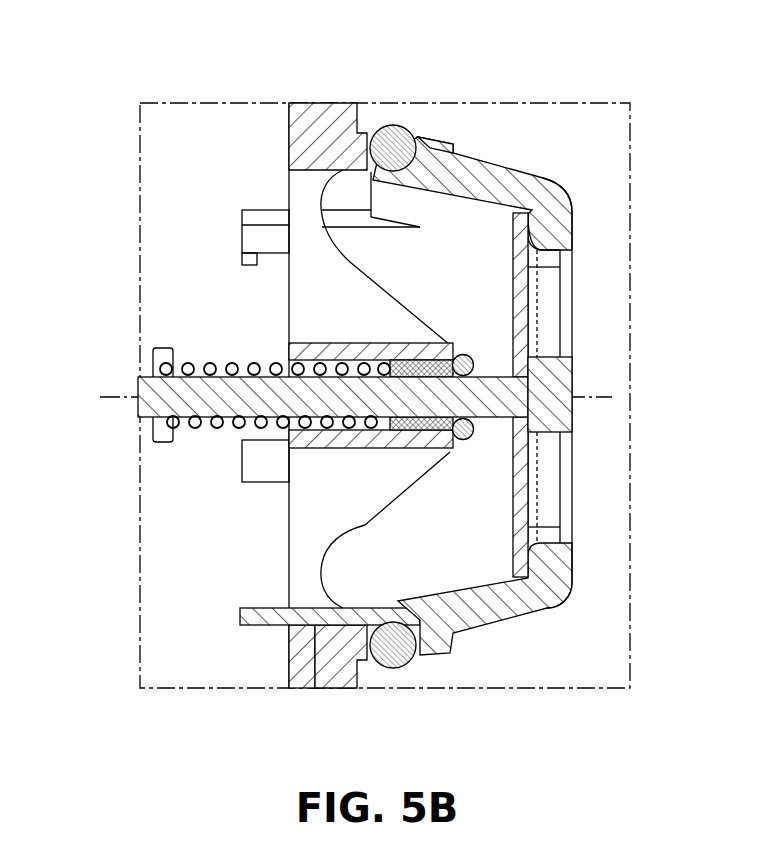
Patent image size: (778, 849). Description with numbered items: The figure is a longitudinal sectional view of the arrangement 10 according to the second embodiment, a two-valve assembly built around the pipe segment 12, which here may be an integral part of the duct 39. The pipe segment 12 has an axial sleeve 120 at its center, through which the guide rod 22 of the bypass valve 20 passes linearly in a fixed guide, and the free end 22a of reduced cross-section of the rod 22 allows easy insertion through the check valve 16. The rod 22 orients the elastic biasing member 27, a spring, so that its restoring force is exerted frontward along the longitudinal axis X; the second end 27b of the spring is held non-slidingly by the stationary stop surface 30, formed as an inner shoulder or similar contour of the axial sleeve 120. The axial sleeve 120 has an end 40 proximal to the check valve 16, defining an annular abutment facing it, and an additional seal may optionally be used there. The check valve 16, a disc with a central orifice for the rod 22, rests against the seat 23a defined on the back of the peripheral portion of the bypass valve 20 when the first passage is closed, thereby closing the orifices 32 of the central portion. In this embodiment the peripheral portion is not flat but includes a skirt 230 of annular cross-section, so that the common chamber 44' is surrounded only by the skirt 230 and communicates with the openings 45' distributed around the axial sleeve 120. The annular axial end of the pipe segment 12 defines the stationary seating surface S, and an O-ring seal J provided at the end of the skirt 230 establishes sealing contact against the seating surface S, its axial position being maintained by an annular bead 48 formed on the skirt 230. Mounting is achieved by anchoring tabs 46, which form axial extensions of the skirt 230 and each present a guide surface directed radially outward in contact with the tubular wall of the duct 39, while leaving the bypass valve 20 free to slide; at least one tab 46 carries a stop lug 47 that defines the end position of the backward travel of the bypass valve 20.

The arrangement 10 is at (226, 82).
The pipe segment 12 is at (310, 117).
The stationary seating surface S is at (367, 153).
The O-ring seal J is at (389, 132).
The annular bead 48 is at (432, 137).
The skirt 230 is at (481, 176).
The bypass valve 20 is at (578, 178).
The seat 23a is at (540, 233).
The orifices 32 is at (552, 278).
The end of the axial sleeve 40 is at (473, 357).
The check valve 16 is at (530, 476).
The common chamber 44' is at (515, 530).
The openings 45' is at (254, 257).
The anchoring tabs 46 is at (263, 218).
The stop lug 47 is at (242, 258).
The elastic biasing member 27 is at (232, 372).
The second end of the elastic biasing member 27b is at (393, 432).
The guide rod 22 is at (207, 428).
The free end of the rod 22a is at (142, 414).
The axial sleeve 120 is at (335, 448).
The duct 39 is at (343, 672).
The stationary stop surface 30 is at (412, 432).
The longitudinal axis X is at (592, 390).